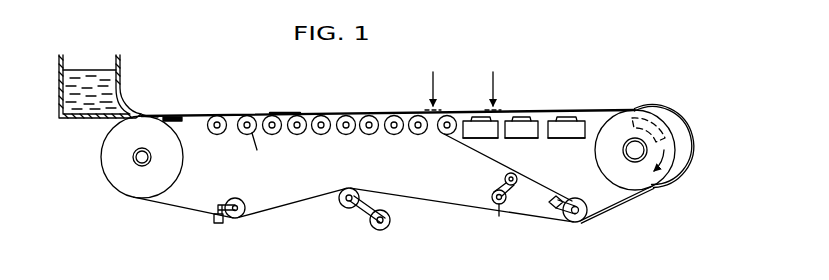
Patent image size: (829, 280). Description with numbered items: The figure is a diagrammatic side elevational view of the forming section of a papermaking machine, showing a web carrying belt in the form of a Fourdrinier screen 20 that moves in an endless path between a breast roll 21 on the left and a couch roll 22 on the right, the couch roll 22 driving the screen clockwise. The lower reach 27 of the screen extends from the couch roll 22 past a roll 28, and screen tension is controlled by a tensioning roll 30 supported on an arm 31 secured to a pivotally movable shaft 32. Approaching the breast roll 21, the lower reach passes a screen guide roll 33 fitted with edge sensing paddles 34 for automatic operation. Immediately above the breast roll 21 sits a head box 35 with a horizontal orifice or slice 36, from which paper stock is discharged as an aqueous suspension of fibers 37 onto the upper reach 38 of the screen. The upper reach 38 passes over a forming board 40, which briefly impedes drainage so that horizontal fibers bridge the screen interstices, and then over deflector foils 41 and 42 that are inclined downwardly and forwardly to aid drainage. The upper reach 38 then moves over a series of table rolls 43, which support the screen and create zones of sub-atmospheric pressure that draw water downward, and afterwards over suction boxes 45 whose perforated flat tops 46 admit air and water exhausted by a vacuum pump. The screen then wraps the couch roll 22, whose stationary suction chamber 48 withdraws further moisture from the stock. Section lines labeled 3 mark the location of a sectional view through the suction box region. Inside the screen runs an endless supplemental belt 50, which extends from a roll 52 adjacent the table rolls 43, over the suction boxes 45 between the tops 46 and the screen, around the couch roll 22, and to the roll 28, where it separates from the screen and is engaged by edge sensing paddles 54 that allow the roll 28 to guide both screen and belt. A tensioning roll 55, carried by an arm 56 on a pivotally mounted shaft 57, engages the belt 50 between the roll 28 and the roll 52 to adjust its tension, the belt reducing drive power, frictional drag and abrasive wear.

The section line 3 is at (463, 80).
The Fourdrinier screen 20 is at (188, 113).
The breast roll 21 is at (123, 180).
The couch roll 22 is at (650, 173).
The lower reach 27 is at (464, 204).
The roll 28 is at (588, 218).
The tensioning roll 30 is at (345, 207).
The arm 31 is at (364, 212).
The pivotally movable shaft 32 is at (391, 224).
The screen guide roll 33 is at (237, 218).
The edge sensing paddles 34 is at (217, 222).
The head box 35 is at (119, 58).
The slice 36 is at (160, 115).
The aqueous suspension of fibers 37 is at (213, 114).
The upper reach 38 is at (284, 112).
The forming board 40 is at (172, 116).
The deflector foil 41 is at (221, 135).
The deflector foil 42 is at (252, 134).
The table rolls 43 is at (297, 135).
The suction boxes 45 is at (566, 139).
The flat tops 46 is at (480, 118).
The suction chamber 48 is at (662, 131).
The supplemental belt 50 is at (470, 150).
The roll 52 is at (444, 135).
The edge sensing paddles 54 is at (557, 212).
The tensioning roll 55 is at (504, 177).
The arm 56 is at (507, 195).
The pivotally mounted shaft 57 is at (499, 205).